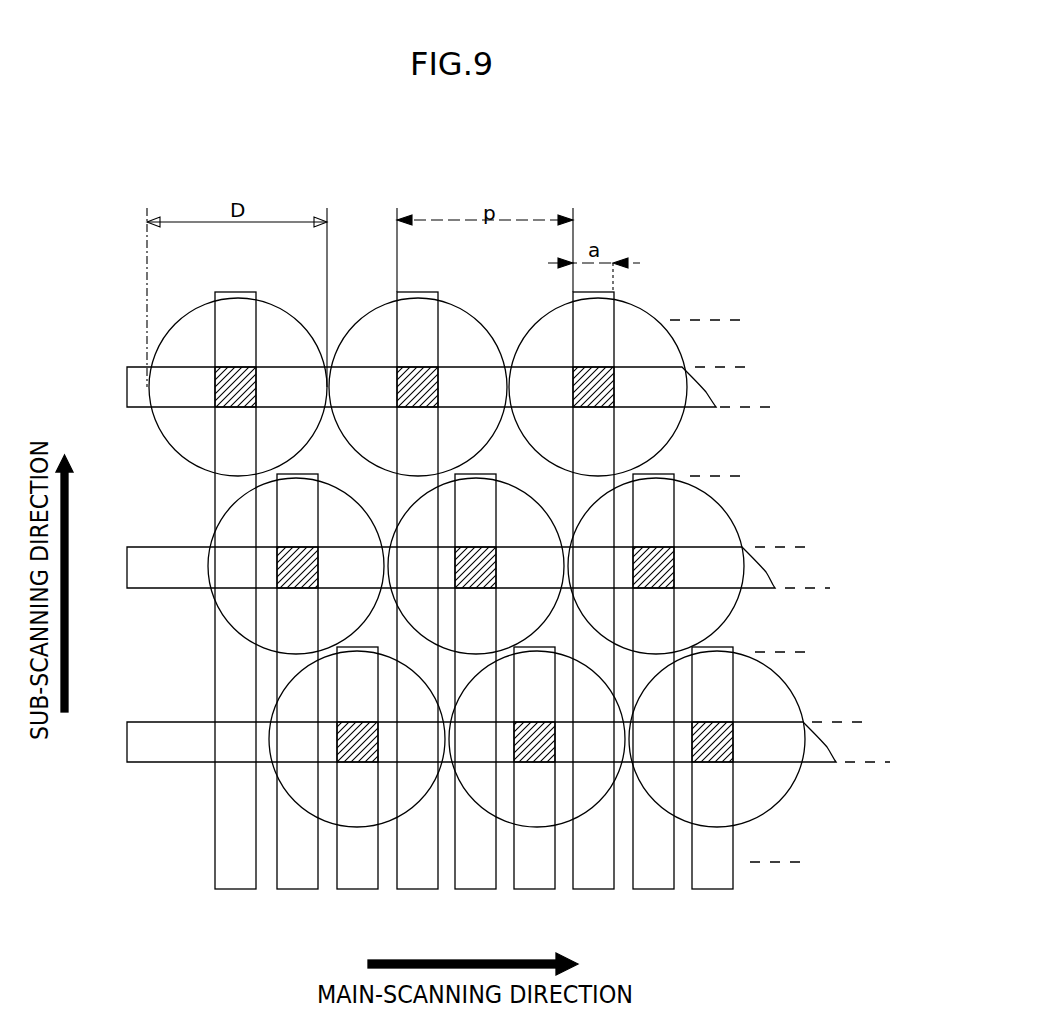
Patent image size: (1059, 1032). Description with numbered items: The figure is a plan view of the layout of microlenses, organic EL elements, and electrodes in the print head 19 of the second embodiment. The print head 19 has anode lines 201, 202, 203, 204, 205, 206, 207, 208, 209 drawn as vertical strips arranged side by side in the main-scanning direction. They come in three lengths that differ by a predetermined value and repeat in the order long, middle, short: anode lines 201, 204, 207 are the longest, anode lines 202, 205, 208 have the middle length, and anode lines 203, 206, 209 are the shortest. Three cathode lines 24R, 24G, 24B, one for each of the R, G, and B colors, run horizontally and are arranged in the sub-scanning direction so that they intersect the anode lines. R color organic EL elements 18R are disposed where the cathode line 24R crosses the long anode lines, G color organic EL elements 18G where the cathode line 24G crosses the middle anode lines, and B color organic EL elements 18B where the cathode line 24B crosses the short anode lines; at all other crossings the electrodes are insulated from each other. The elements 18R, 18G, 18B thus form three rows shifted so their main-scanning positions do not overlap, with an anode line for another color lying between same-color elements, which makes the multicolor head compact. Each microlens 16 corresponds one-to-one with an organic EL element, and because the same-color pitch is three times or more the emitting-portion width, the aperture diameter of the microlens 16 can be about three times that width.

The print head 19 is at (712, 194).
The microlens 16 is at (161, 432).
The R color organic EL element 18R is at (240, 372).
The G color organic EL element 18G is at (300, 550).
The B color organic EL element 18B is at (364, 752).
The cathode line 24R is at (127, 389).
The cathode line 24G is at (145, 548).
The cathode line 24B is at (157, 722).
The anode line 201 is at (237, 889).
The anode line 202 is at (300, 889).
The anode line 203 is at (363, 889).
The anode line 204 is at (421, 889).
The anode line 205 is at (478, 889).
The anode line 206 is at (538, 889).
The anode line 207 is at (597, 889).
The anode line 208 is at (657, 889).
The anode line 209 is at (717, 889).